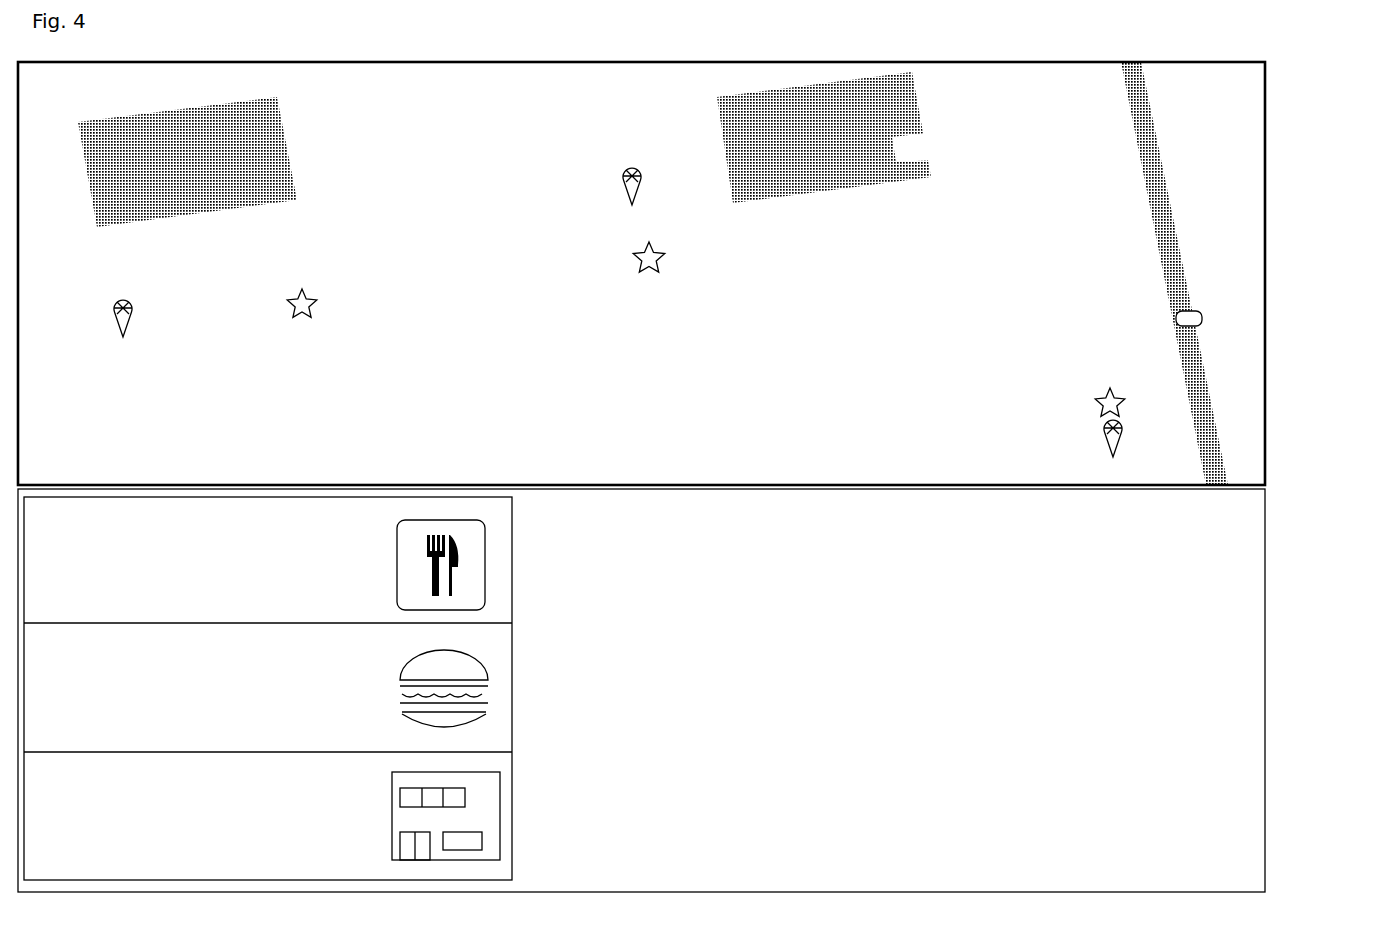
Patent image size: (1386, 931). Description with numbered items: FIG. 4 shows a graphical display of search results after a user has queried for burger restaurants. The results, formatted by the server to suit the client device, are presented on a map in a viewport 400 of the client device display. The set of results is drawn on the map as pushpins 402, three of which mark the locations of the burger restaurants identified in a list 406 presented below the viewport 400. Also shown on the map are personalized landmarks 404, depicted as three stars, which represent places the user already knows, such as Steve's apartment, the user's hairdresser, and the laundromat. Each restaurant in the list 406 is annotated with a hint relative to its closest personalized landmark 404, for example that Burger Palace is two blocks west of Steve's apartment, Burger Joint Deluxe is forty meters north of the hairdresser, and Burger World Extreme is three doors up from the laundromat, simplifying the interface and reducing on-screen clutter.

The viewport 400 is at (1266, 178).
The pushpins 402 is at (134, 303).
The personalized landmarks 404 is at (316, 304).
The list 406 is at (513, 556).